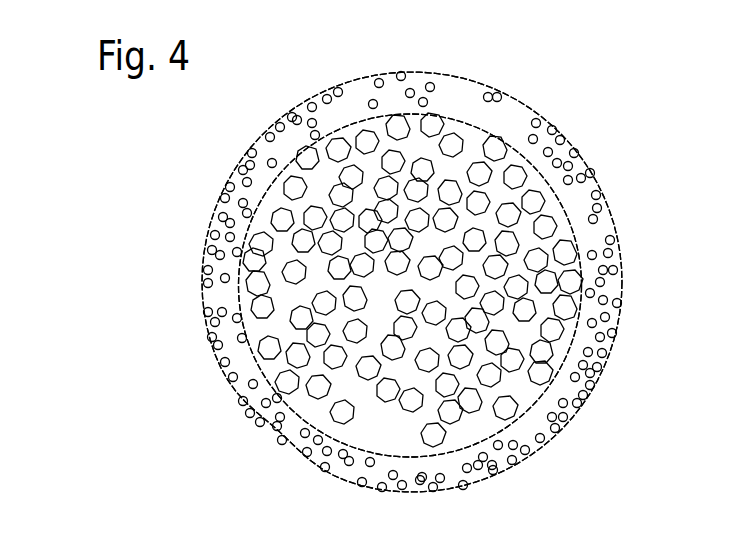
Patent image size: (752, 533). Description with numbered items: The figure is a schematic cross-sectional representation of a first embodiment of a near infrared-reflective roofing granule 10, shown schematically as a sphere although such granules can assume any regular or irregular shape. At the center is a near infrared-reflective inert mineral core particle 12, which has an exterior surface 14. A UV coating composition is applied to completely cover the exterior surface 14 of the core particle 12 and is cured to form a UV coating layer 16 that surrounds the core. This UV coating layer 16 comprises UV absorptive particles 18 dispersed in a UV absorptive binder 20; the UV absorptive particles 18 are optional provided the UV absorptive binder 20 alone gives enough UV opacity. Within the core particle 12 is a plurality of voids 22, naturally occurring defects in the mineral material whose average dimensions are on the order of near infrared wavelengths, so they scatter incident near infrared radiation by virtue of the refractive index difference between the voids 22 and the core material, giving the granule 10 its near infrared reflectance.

The near infrared-reflective roofing granule 10 is at (162, 275).
The near infrared-reflective inert mineral core particle 12 is at (325, 172).
The exterior surface 14 is at (570, 212).
The UV coating layer 16 is at (495, 120).
The UV absorptive particles 18 is at (620, 242).
The UV absorptive binder 20 is at (456, 95).
The voids 22 is at (428, 434).